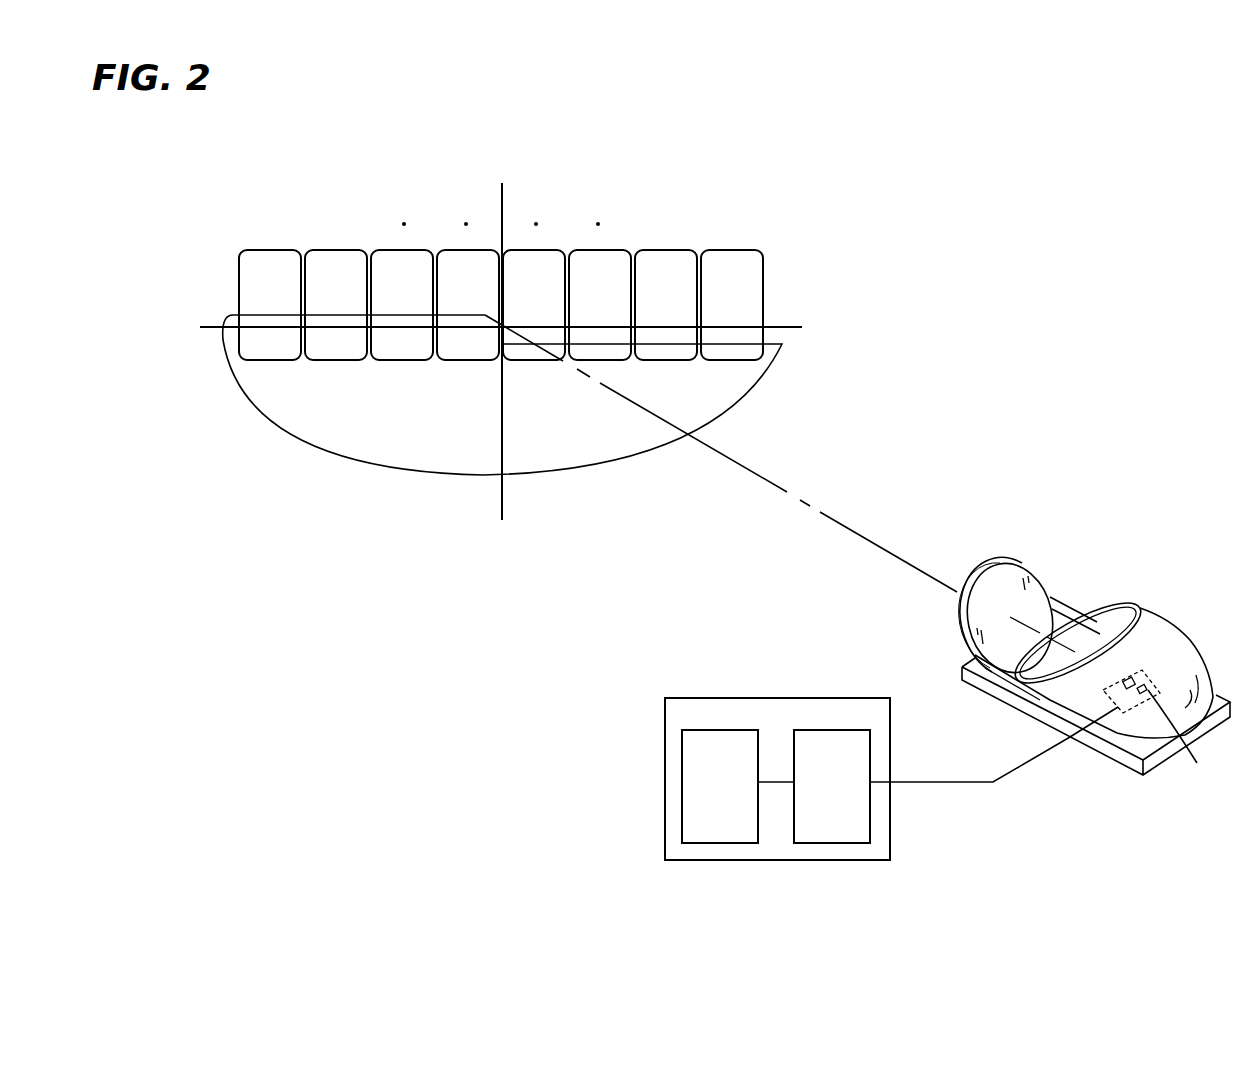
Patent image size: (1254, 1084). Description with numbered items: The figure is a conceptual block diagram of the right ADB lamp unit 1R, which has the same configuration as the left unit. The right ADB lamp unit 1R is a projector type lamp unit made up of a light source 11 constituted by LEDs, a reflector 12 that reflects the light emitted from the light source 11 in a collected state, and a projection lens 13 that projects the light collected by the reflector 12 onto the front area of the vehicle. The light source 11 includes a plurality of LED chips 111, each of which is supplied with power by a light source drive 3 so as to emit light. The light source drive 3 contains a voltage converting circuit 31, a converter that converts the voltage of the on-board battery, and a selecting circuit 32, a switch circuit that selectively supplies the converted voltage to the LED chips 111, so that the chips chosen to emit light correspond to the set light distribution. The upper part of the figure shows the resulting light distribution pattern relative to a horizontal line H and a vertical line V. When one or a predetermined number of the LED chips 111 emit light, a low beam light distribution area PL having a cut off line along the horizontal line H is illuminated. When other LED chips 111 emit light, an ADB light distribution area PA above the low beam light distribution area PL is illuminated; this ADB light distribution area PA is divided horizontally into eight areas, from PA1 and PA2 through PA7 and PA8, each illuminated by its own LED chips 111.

The vertical line V is at (499, 334).
The horizontal line H is at (514, 327).
The ADB light distribution area PA is at (508, 262).
The divided area PA1 is at (283, 250).
The divided area PA2 is at (346, 250).
The divided area PA7 is at (660, 250).
The divided area PA8 is at (730, 250).
The low beam light distribution area PL is at (637, 458).
The right ADB lamp unit 1R is at (1058, 627).
The projection lens 13 is at (995, 560).
The reflector 12 is at (1157, 613).
The light source 11 is at (1163, 681).
The LED chip 111 is at (1058, 736).
The light source drive 3 is at (815, 761).
The voltage converting circuit 31 is at (718, 730).
The selecting circuit 32 is at (833, 730).